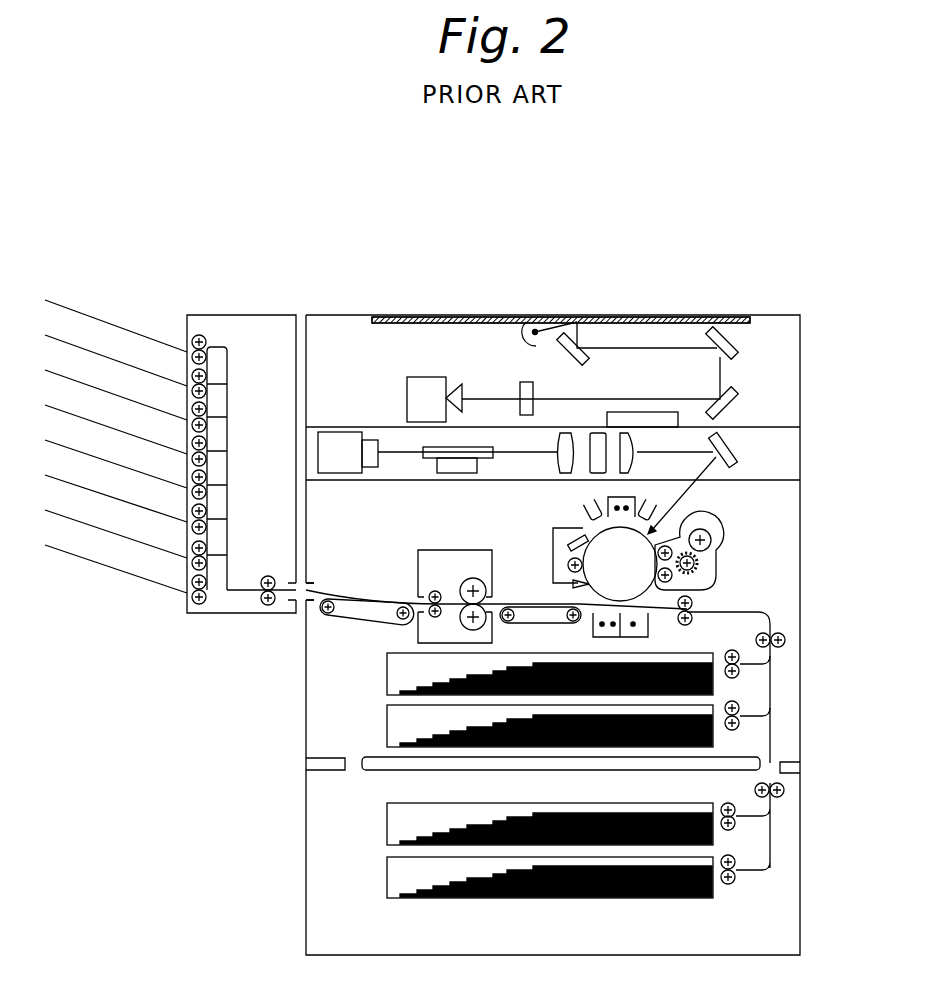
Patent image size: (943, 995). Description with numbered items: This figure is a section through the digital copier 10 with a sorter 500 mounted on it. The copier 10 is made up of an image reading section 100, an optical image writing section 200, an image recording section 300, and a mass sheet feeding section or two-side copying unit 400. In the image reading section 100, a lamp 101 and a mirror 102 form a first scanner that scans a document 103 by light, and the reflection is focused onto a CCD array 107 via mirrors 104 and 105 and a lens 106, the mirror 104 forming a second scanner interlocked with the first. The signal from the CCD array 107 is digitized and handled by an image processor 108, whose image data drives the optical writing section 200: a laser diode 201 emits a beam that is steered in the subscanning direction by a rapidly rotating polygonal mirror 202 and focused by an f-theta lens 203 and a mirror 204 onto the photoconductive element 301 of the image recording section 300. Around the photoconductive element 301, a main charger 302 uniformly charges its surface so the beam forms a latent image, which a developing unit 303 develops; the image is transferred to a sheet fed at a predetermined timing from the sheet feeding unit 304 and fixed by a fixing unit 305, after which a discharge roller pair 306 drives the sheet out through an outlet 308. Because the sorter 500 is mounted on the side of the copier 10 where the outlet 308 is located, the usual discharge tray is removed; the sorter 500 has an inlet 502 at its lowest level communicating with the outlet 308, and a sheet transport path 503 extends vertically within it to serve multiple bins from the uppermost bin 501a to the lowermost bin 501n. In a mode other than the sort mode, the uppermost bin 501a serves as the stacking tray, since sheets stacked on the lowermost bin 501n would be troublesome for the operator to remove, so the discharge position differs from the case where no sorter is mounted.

The digital copier 10 is at (553, 580).
The image reading section 100 is at (579, 372).
The lamp 101 is at (520, 326).
The mirror 102 is at (583, 360).
The document 103 is at (603, 318).
The mirror 104 is at (736, 346).
The mirror 105 is at (737, 404).
The lens 106 is at (526, 382).
The CCD array 107 is at (418, 377).
The image processor 108 is at (607, 420).
The optical image writing section 200 is at (579, 449).
The laser diode 201 is at (332, 432).
The polygonal mirror 202 is at (480, 446).
The f-theta lens 203 is at (558, 466).
The mirror 204 is at (736, 455).
The image recording section 300 is at (579, 661).
The photoconductive element 301 is at (592, 534).
The main charger 302 is at (622, 497).
The developing unit 303 is at (718, 540).
The sheet feeding unit 304 is at (694, 656).
The fixing unit 305 is at (463, 550).
The discharge roller pair 306 is at (432, 590).
The outlet 308 is at (311, 587).
The mass sheet feeding section or two-side copying unit 400 is at (616, 837).
The sorter 500 is at (207, 624).
The uppermost bin 501a is at (217, 348).
The lowermost bin 501n is at (213, 578).
The inlet 502 is at (288, 588).
The sheet transport path 503 is at (228, 402).